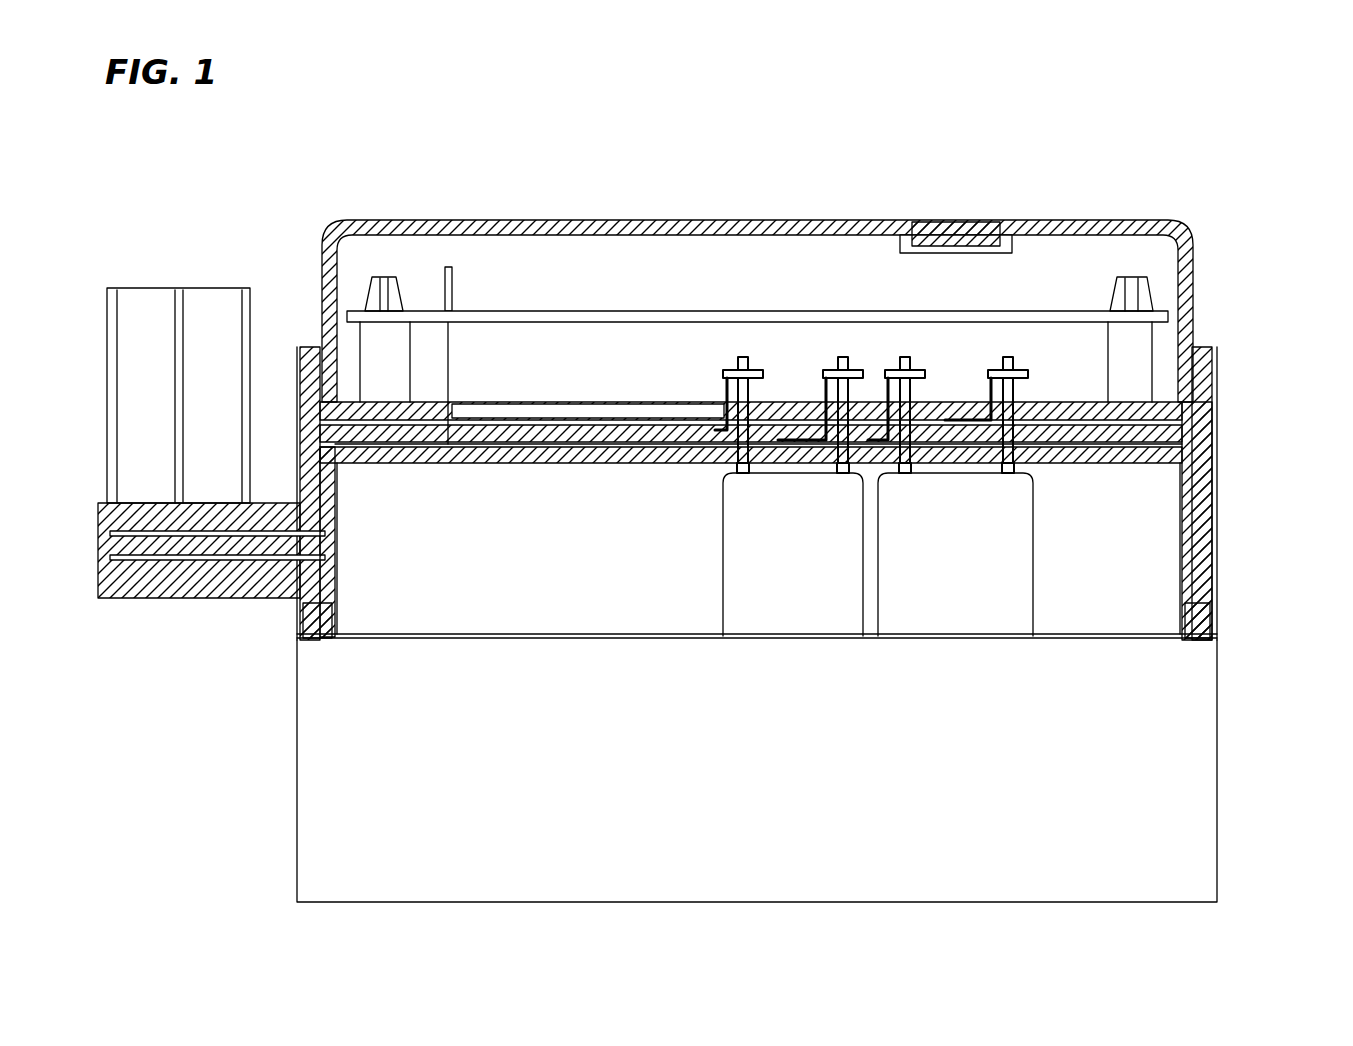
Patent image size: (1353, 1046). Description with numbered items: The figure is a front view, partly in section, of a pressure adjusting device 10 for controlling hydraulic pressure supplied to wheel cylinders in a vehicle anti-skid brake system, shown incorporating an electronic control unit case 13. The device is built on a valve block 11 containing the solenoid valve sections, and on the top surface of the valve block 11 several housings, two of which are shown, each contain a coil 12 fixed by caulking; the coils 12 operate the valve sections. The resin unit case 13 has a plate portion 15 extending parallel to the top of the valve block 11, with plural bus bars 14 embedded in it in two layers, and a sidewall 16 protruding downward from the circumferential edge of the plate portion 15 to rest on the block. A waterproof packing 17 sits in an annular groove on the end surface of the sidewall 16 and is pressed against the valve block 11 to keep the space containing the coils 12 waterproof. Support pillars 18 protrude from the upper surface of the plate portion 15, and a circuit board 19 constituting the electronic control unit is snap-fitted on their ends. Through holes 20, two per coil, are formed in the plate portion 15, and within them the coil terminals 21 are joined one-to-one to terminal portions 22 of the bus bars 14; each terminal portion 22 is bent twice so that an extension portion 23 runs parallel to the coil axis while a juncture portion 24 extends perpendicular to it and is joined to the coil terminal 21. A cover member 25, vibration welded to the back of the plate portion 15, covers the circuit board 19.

The pressure adjusting device 10 is at (495, 200).
The valve block 11 is at (1200, 812).
The coils 12 is at (797, 613).
The electronic control unit case 13 is at (1220, 510).
The bus bars 14 is at (570, 443).
The plate portion 15 is at (1192, 431).
The sidewall 16 is at (1205, 552).
The waterproof packing 17 is at (1196, 648).
The support pillars 18 is at (1142, 355).
The circuit board 19 is at (1082, 311).
The through holes 20 is at (1018, 402).
The coil terminals 21 is at (768, 384).
The terminal portions 22 is at (716, 362).
The extension portion 23 is at (725, 384).
The juncture portion 24 is at (735, 357).
The cover member 25 is at (1176, 221).